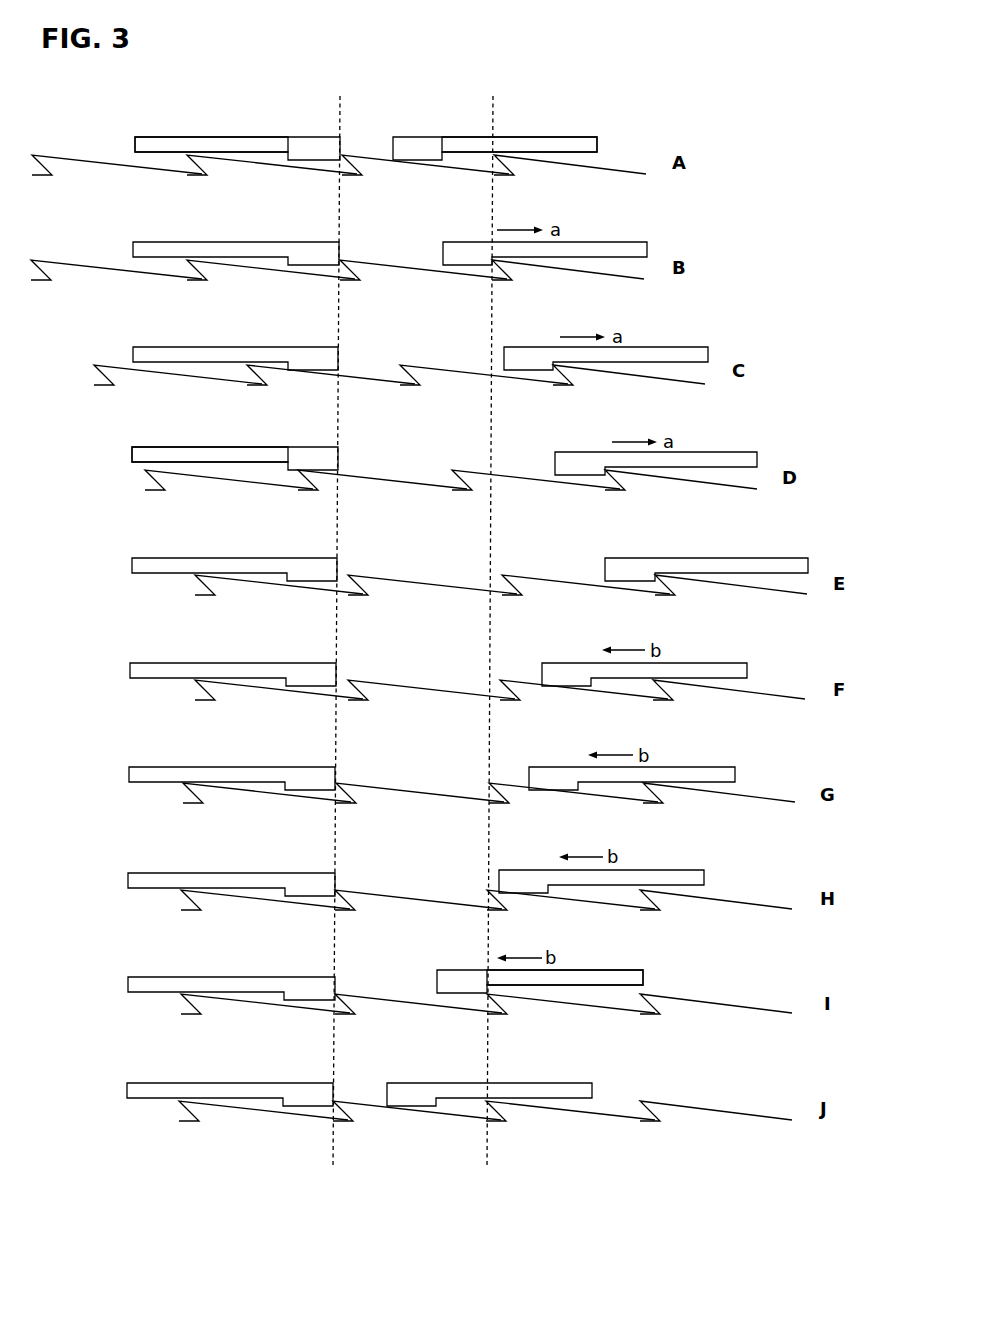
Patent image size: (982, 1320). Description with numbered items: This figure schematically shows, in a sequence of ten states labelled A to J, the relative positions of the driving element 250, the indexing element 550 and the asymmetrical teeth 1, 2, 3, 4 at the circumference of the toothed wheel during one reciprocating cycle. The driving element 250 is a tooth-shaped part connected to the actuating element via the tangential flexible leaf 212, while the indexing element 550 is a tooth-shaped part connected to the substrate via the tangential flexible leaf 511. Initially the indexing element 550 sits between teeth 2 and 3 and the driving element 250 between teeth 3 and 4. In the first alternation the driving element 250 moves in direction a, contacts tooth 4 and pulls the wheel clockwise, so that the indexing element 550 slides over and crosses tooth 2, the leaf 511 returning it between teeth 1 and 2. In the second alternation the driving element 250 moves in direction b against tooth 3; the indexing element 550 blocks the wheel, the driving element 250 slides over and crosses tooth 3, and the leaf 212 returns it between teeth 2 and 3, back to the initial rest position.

The tooth 1 is at (197, 640).
The tooth 2 is at (352, 640).
The tooth 3 is at (505, 640).
The tooth 4 is at (649, 640).
The indexing element 550 is at (317, 151).
The tangential flexible leaf 511 is at (173, 145).
The driving element 250 is at (422, 150).
The tangential flexible leaf 212 is at (535, 143).